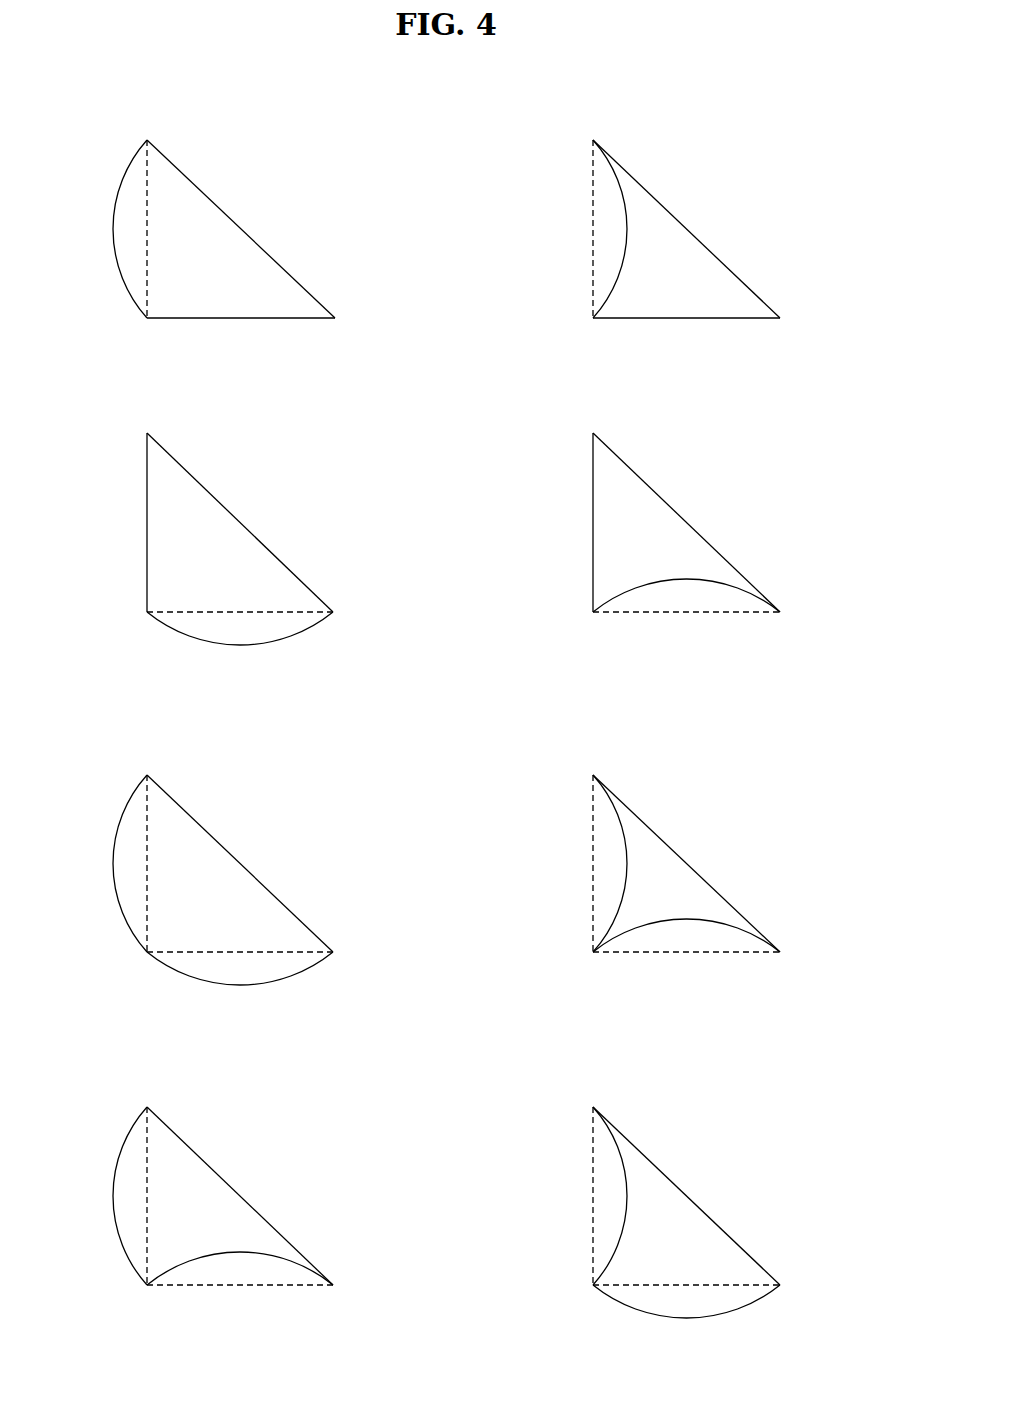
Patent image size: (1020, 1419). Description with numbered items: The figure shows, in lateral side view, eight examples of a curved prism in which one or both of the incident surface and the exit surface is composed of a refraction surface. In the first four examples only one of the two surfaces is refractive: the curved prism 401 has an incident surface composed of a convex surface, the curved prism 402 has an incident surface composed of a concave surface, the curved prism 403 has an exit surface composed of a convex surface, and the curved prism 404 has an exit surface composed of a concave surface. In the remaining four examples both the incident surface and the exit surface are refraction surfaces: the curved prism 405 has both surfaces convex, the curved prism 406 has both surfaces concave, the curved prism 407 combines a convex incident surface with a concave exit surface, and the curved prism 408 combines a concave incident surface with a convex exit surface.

The curved prism 401 is at (254, 207).
The curved prism 402 is at (700, 207).
The curved prism 403 is at (254, 500).
The curved prism 404 is at (700, 500).
The curved prism 405 is at (254, 842).
The curved prism 406 is at (700, 842).
The curved prism 407 is at (254, 1174).
The curved prism 408 is at (700, 1174).